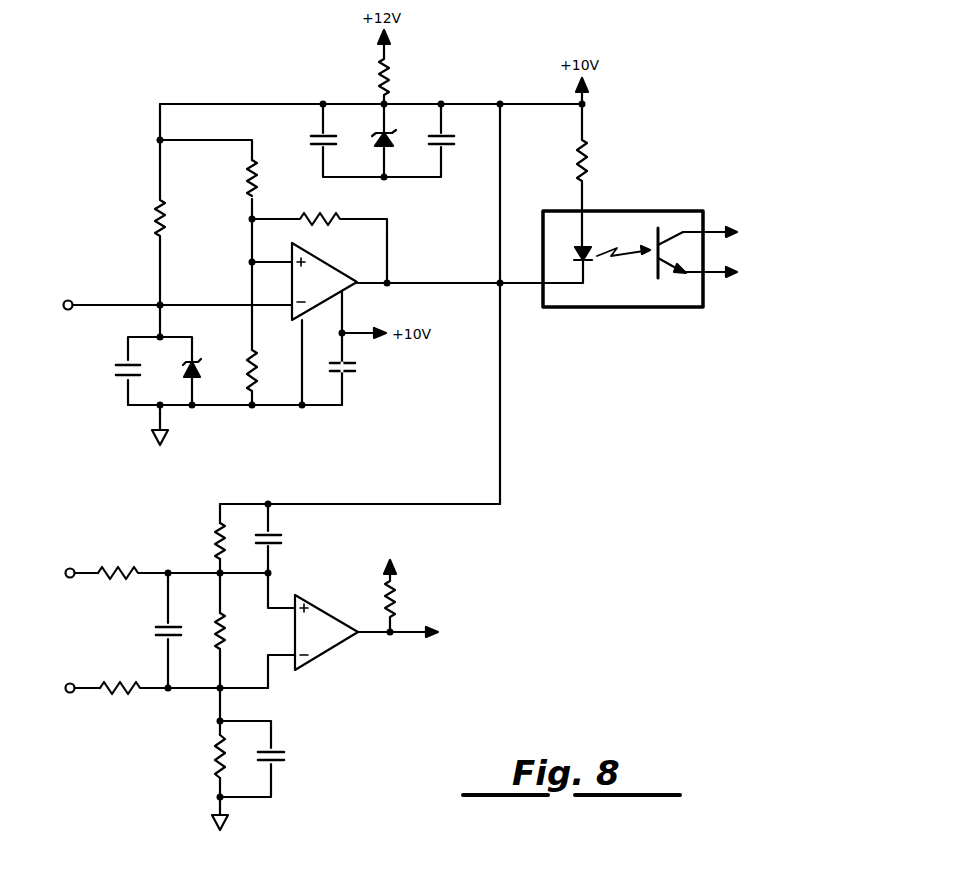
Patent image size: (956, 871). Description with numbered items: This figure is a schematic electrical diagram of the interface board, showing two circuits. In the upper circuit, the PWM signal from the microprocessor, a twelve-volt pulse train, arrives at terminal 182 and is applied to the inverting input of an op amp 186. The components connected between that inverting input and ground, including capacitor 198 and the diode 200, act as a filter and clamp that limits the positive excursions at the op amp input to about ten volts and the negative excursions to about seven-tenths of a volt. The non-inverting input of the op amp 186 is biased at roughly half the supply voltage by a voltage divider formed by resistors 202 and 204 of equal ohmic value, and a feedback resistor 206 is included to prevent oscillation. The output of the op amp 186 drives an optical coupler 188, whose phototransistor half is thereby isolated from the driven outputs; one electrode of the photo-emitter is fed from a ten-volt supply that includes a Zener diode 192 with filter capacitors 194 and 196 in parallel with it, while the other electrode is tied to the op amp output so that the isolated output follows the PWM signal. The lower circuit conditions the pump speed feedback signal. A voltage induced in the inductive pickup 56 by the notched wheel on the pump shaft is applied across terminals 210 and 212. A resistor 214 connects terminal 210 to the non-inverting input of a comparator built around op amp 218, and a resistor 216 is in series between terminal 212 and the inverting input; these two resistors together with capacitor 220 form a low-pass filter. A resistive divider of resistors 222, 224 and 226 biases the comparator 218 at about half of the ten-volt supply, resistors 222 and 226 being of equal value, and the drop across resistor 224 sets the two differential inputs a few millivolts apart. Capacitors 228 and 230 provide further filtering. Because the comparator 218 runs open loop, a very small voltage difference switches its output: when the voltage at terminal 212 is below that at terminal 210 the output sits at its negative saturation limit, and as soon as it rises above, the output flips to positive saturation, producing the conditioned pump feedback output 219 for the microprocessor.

The inductive pickup 56 is at (63, 633).
The terminal 182 is at (67, 298).
The op amp 186 is at (324, 281).
The optical coupler 188 is at (639, 211).
The Zenar diode 192 is at (389, 132).
The filter capacitor 194 is at (318, 143).
The filter capacitor 196 is at (446, 143).
The capacitor 198 is at (118, 366).
The diode 200 is at (226, 353).
The resistor 202 is at (248, 187).
The resistor 204 is at (262, 377).
The feedback resistor 206 is at (328, 213).
The terminal 210 is at (68, 568).
The terminal 212 is at (70, 694).
The resistor 214 is at (125, 568).
The resistor 216 is at (138, 693).
The op amp 218 is at (341, 648).
The PFB output signal line 219 is at (411, 630).
The capacitor 220 is at (160, 630).
The resistor 222 is at (215, 541).
The resistor 224 is at (228, 619).
The resistor 226 is at (215, 746).
The capacitor 228 is at (282, 540).
The capacitor 230 is at (286, 757).